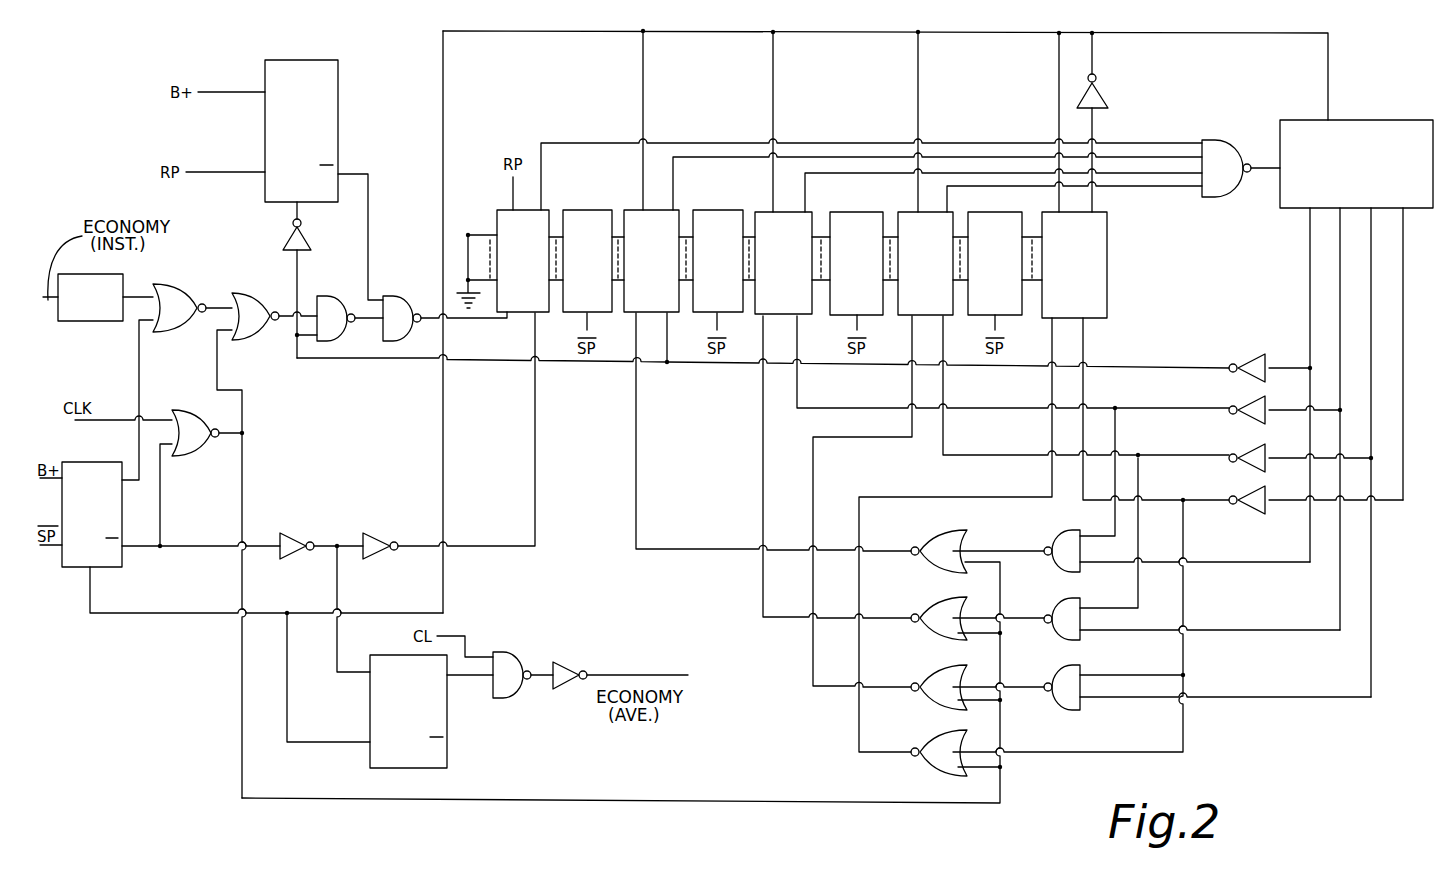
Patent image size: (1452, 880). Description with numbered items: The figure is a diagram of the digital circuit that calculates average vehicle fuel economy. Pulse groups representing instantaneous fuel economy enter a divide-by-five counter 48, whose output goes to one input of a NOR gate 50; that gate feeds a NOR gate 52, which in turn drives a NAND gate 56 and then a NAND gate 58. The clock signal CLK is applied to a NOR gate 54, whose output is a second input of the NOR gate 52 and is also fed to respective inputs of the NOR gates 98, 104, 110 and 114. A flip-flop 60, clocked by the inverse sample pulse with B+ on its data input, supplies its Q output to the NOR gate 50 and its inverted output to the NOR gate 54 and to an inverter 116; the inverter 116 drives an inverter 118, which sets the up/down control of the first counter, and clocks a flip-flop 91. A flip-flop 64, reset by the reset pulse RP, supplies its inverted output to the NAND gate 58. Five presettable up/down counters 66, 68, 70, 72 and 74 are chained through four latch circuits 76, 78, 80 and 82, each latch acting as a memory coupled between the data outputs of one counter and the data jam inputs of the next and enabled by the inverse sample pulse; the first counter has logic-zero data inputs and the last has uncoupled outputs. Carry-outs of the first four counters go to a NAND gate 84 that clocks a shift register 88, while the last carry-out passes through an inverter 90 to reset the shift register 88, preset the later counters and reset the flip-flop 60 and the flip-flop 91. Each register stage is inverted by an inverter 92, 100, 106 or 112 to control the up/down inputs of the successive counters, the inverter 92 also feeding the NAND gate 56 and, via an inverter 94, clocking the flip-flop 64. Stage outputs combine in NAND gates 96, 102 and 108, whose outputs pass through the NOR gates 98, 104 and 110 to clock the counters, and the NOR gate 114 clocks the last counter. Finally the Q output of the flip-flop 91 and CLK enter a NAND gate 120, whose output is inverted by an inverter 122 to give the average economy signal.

The divide-by-five counter 48 is at (78, 322).
The NOR gate 50 is at (176, 300).
The NOR gate 52 is at (247, 312).
The NOR gate 54 is at (194, 456).
The NAND gate 56 is at (328, 298).
The NAND gate 58 is at (398, 298).
The flip-flop 60 is at (90, 478).
The flip-flop 64 is at (302, 63).
The presettable up/down counter 66 is at (519, 314).
The presettable up/down counter 68 is at (633, 210).
The presettable up/down counter 70 is at (787, 212).
The presettable up/down counter 72 is at (904, 212).
The presettable up/down counter 74 is at (1097, 250).
The latch circuit 76 is at (588, 210).
The latch circuit 78 is at (722, 210).
The latch circuit 80 is at (856, 220).
The latch circuit 82 is at (993, 230).
The NAND gate 84 is at (1220, 145).
The shift register 88 is at (1378, 128).
The inverter 90 is at (1106, 92).
The flip-flop 91 is at (447, 760).
The inverter 92 is at (1252, 355).
The inverter 94 is at (286, 240).
The NAND gate 96 is at (1060, 545).
The NOR gate 98 is at (940, 545).
The inverter 100 is at (1240, 408).
The NAND gate 102 is at (1070, 612).
The NOR gate 104 is at (930, 605).
The inverter 106 is at (1240, 455).
The NAND gate 108 is at (1075, 702).
The NOR gate 110 is at (925, 675).
The inverter 112 is at (1250, 505).
The NOR gate 114 is at (925, 742).
The inverter 116 is at (288, 533).
The inverter 118 is at (374, 533).
The NAND gate 120 is at (505, 658).
The inverter 122 is at (568, 665).